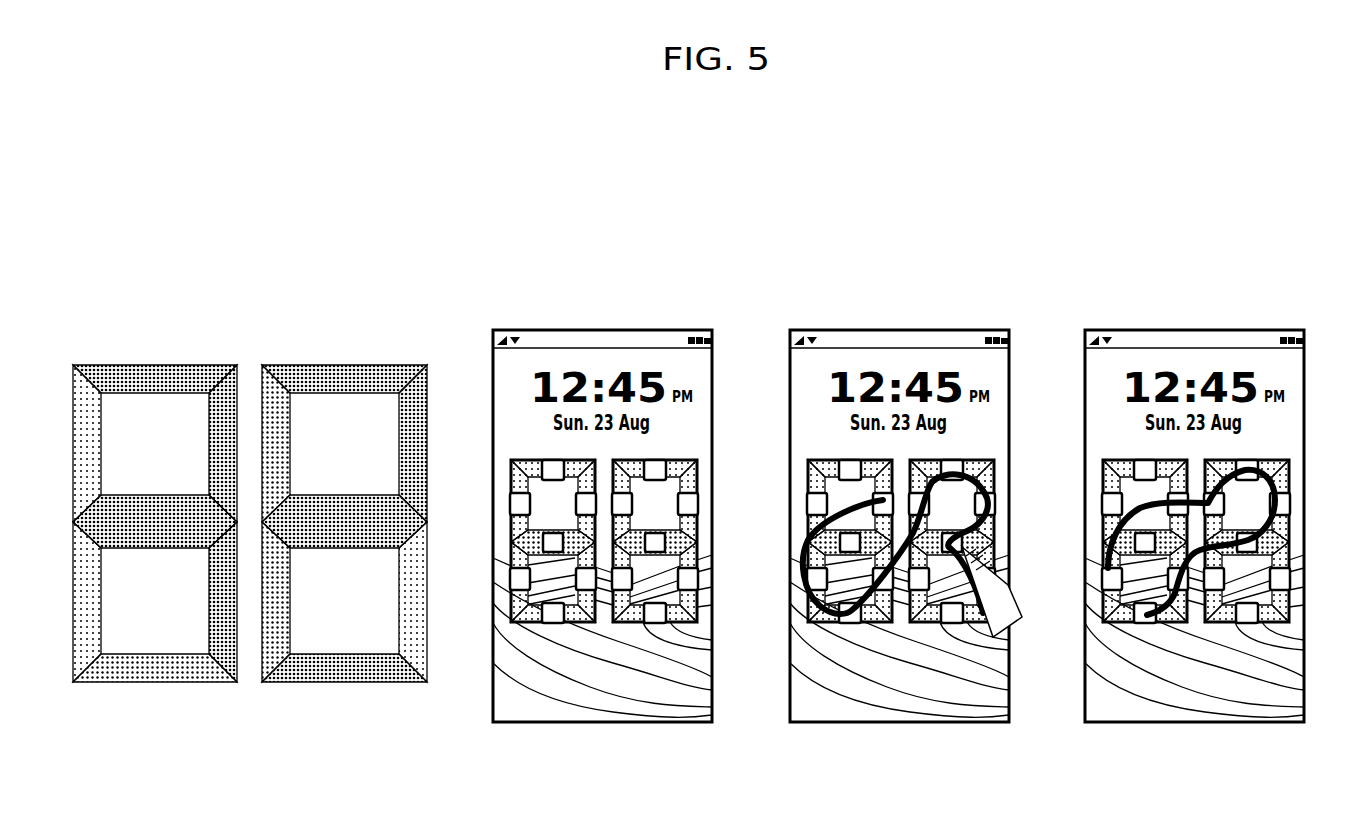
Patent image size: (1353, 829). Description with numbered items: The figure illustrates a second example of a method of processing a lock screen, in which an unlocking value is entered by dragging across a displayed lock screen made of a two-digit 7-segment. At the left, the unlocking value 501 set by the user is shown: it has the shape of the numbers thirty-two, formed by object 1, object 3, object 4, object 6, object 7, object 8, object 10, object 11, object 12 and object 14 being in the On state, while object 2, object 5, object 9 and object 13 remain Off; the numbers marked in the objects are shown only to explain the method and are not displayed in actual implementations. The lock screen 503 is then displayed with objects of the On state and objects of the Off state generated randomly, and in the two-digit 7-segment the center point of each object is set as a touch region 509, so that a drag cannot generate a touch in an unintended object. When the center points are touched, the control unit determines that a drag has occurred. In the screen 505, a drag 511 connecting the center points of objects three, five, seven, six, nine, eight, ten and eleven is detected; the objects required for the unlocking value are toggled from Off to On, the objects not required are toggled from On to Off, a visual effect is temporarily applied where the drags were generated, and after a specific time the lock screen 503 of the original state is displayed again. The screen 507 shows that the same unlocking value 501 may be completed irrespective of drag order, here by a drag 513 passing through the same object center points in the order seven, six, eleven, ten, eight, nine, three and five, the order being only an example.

The object No. 1 is at (155, 379).
The object No. 2 is at (87, 443).
The object No. 3 is at (223, 443).
The object No. 4 is at (155, 521).
The object No. 5 is at (87, 602).
The object No. 6 is at (223, 602).
The object No. 7 is at (155, 667).
The object No. 8 is at (344, 379).
The object No. 9 is at (276, 443).
The object No. 10 is at (413, 443).
The object No. 11 is at (344, 521).
The object No. 12 is at (276, 602).
The object No. 13 is at (413, 602).
The object No. 14 is at (344, 667).
The unlocking value 501 is at (250, 559).
The lock screen 503 is at (628, 554).
The screen 505 is at (920, 554).
The screen 507 is at (1214, 554).
The touch region 509 is at (698, 503).
The drag 511 is at (990, 507).
The drag 513 is at (1285, 503).